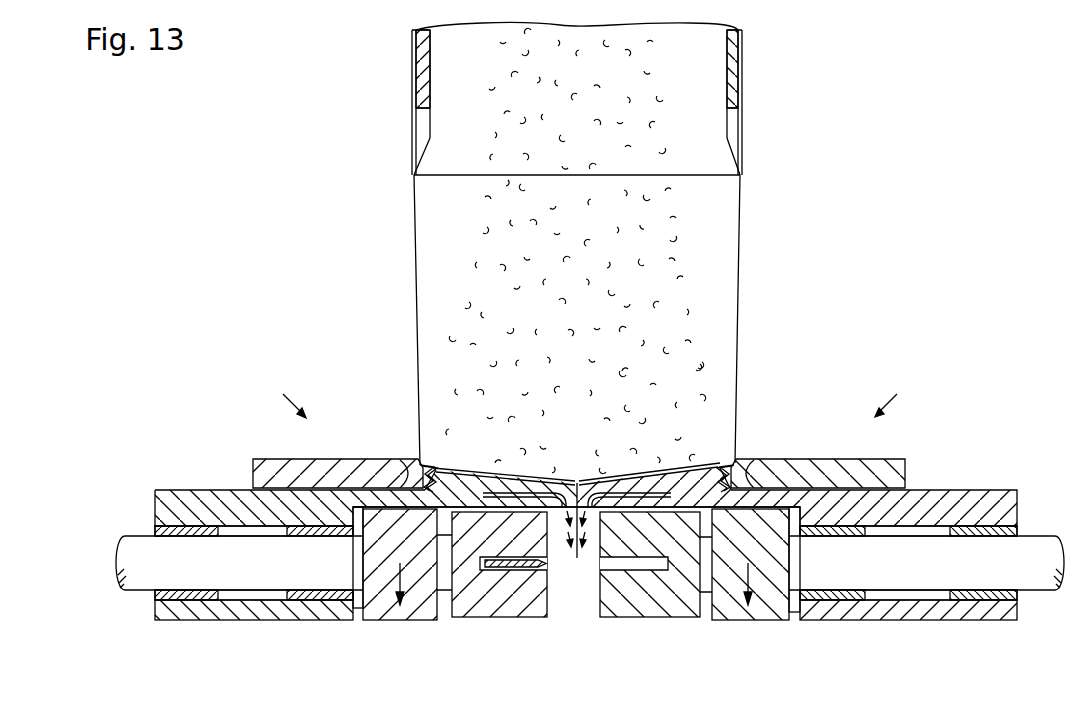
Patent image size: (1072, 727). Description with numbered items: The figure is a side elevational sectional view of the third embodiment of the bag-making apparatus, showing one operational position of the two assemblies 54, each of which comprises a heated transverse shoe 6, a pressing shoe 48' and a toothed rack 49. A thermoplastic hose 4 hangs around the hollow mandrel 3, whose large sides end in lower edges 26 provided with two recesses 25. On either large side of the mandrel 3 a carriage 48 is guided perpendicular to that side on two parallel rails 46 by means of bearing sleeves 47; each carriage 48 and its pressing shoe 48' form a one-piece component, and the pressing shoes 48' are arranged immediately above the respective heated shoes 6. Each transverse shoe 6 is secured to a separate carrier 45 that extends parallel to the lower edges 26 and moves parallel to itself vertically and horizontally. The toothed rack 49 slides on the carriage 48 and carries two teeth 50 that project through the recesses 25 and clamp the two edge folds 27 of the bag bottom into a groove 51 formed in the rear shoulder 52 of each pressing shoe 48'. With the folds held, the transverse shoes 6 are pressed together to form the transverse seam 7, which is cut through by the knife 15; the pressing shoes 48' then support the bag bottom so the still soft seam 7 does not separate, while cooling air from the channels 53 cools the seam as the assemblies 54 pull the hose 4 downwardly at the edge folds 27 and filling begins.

The hollow mandrel 3 is at (422, 60).
The hose 4 is at (416, 277).
The heated transverse shoe 6 is at (483, 592).
The transverse seam 7 is at (579, 556).
The knife 15 is at (512, 567).
The recess 25 is at (424, 137).
The lower edge 26 is at (414, 175).
The edge fold 27 is at (418, 475).
The carrier 45 is at (390, 608).
The rail 46 is at (143, 572).
The bearing sleeve 47 is at (297, 592).
The carriage 48 is at (586, 522).
The pressing shoe 48' is at (580, 426).
The toothed rack 49 is at (275, 472).
The tooth 50 is at (404, 478).
The groove 51 is at (435, 475).
The rear shoulder 52 is at (513, 485).
The channel 53 is at (603, 503).
The assembly 54 is at (590, 395).